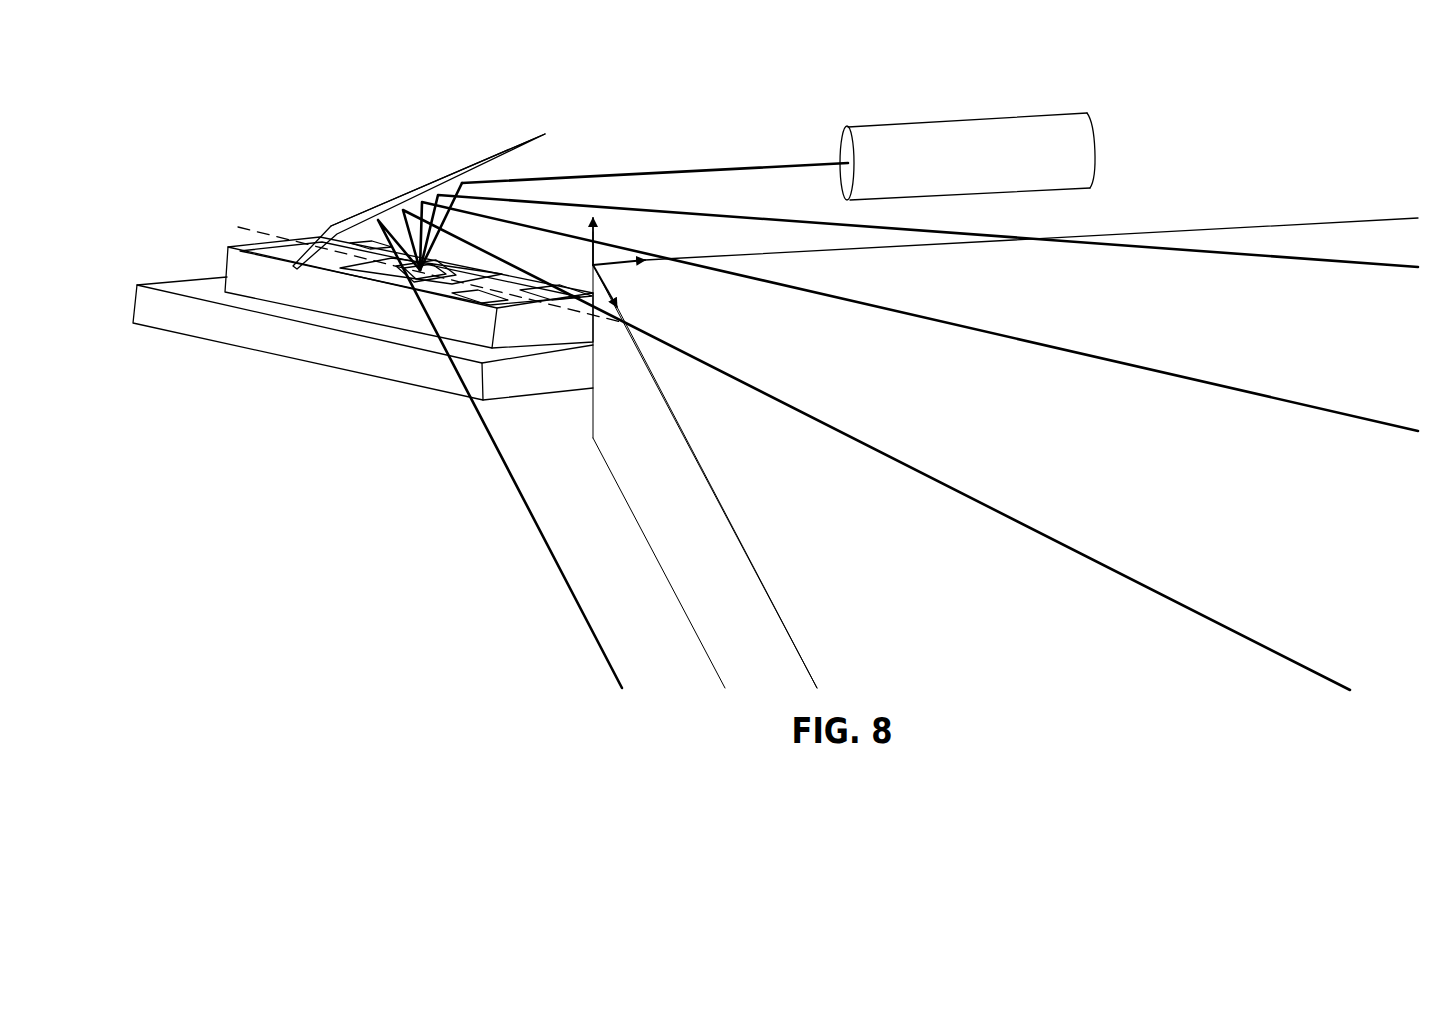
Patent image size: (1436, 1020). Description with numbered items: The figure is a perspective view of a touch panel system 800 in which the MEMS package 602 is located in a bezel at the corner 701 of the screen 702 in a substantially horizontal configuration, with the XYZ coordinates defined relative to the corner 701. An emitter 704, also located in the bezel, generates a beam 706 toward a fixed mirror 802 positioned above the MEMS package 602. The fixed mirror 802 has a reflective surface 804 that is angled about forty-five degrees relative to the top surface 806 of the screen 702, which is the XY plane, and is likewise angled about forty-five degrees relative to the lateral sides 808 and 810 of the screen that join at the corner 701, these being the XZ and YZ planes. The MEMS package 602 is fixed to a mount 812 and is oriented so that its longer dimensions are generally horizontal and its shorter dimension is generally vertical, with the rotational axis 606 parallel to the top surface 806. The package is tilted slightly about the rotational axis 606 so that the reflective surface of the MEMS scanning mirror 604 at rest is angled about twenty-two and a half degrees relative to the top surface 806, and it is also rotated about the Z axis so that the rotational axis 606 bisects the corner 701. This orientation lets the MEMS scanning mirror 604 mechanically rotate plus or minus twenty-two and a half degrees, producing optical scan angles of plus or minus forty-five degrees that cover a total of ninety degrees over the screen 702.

The touch panel system 800 is at (306, 106).
The fixed mirror 802 is at (468, 165).
The reflective surface 804 is at (512, 160).
The rotational axis 606 is at (258, 232).
The beam 706 is at (762, 166).
The emitter 704 is at (980, 128).
The lateral side 810 is at (1165, 231).
The screen 702 is at (1306, 238).
The mount 812 is at (235, 328).
The MEMS package 602 is at (312, 292).
The MEMS scanning mirror 604 is at (397, 273).
The corner 701 is at (592, 413).
The lateral side 808 is at (668, 508).
The top surface 806 is at (953, 585).